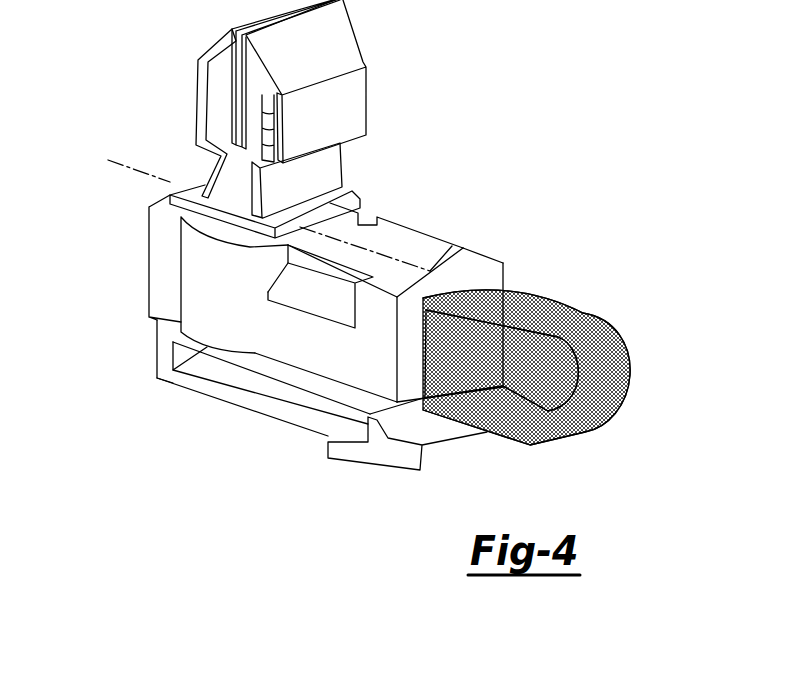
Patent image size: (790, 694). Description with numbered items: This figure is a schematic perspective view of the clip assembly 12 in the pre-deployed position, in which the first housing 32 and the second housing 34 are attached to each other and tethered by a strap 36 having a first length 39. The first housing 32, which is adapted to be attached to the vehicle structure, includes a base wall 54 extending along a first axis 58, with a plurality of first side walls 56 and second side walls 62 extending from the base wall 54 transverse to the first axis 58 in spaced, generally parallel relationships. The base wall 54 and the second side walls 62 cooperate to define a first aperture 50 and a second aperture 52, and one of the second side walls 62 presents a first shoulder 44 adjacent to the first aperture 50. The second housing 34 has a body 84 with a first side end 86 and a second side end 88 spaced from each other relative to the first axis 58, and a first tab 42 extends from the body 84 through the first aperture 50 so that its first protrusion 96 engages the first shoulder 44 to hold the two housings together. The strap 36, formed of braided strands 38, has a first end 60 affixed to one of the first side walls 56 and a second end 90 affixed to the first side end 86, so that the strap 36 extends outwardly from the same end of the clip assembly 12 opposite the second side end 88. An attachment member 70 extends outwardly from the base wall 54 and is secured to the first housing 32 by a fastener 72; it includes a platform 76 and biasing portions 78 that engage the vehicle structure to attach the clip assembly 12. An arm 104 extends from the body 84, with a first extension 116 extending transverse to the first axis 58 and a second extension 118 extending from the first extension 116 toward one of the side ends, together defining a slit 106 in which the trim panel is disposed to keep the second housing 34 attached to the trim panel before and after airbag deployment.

The clip assembly 12 is at (518, 72).
The first housing 32 is at (483, 253).
The second housing 34 is at (157, 354).
The strap 36 is at (628, 358).
The strands 38 is at (626, 398).
The first length 39 is at (535, 441).
The first tab 42 is at (337, 323).
The first shoulder 44 is at (301, 316).
The first aperture 50 is at (270, 263).
The second aperture 52 is at (442, 220).
The base wall 54 is at (383, 240).
The first side walls 56 is at (149, 228).
The first axis 58 is at (120, 150).
The first end of the strap 60 is at (428, 314).
The second side walls 62 is at (507, 276).
The attachment member 70 is at (333, 167).
The fastener 72 is at (281, 147).
The platform 76 is at (348, 200).
The biasing portions 78 is at (198, 72).
The body 84 is at (258, 366).
The first side end 86 is at (427, 414).
The second side end 88 is at (157, 326).
The second end of the strap 90 is at (426, 400).
The first protrusion 96 is at (285, 275).
The arm 104 is at (187, 385).
The slit 106 is at (294, 393).
The first extension 116 is at (157, 370).
The second extension 118 is at (383, 462).